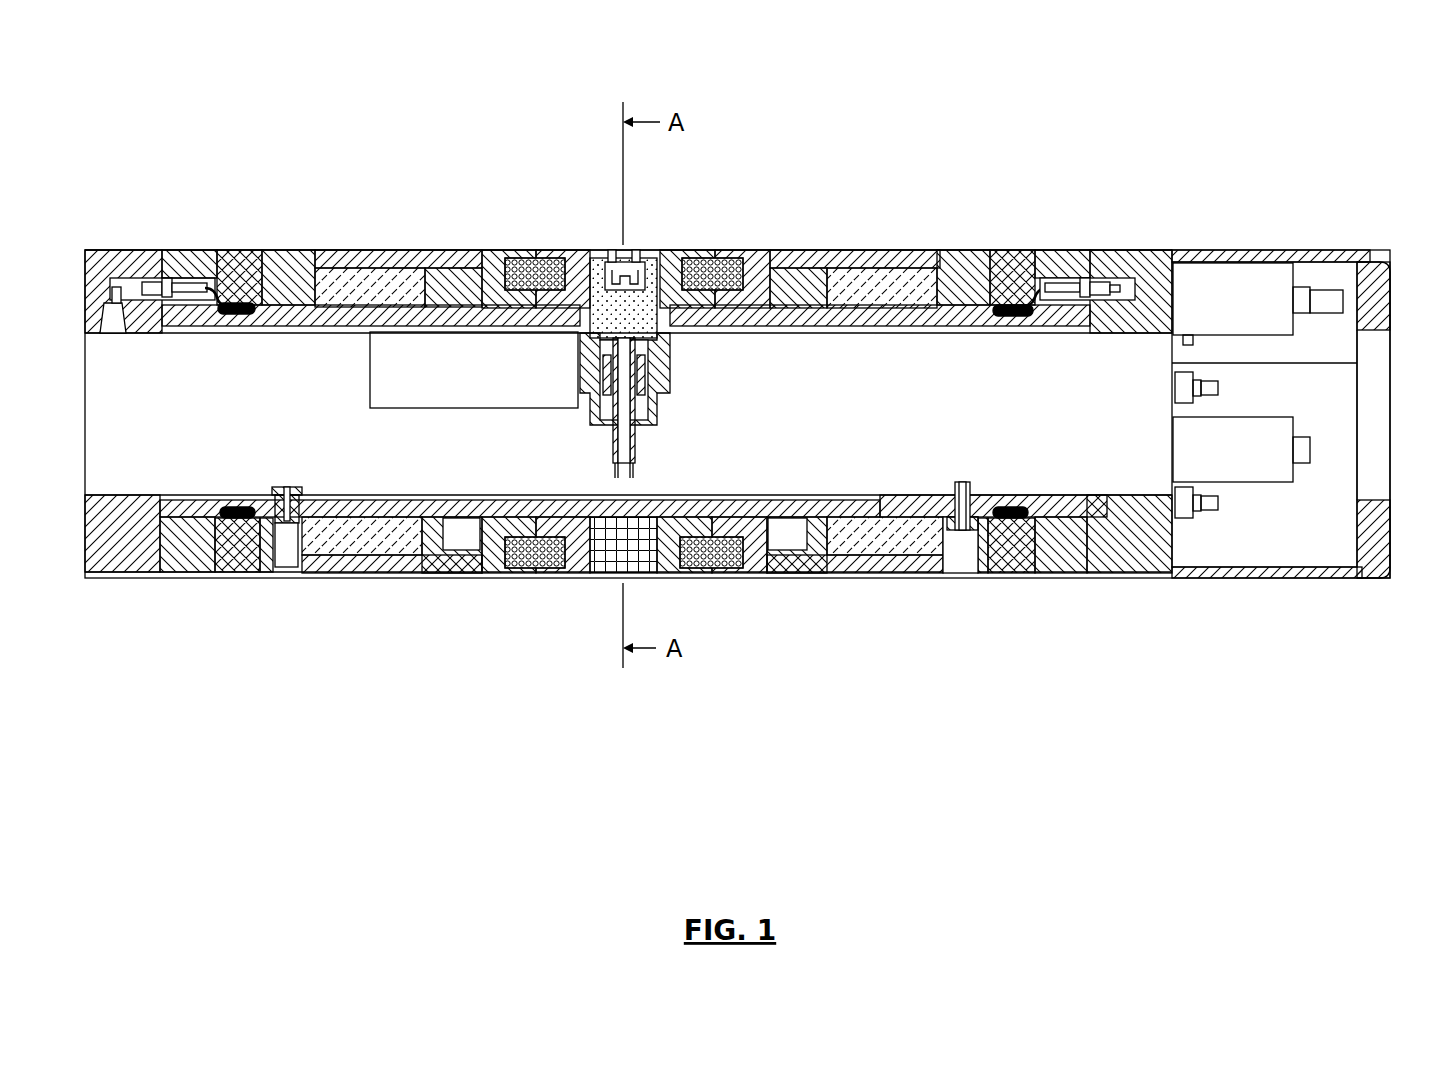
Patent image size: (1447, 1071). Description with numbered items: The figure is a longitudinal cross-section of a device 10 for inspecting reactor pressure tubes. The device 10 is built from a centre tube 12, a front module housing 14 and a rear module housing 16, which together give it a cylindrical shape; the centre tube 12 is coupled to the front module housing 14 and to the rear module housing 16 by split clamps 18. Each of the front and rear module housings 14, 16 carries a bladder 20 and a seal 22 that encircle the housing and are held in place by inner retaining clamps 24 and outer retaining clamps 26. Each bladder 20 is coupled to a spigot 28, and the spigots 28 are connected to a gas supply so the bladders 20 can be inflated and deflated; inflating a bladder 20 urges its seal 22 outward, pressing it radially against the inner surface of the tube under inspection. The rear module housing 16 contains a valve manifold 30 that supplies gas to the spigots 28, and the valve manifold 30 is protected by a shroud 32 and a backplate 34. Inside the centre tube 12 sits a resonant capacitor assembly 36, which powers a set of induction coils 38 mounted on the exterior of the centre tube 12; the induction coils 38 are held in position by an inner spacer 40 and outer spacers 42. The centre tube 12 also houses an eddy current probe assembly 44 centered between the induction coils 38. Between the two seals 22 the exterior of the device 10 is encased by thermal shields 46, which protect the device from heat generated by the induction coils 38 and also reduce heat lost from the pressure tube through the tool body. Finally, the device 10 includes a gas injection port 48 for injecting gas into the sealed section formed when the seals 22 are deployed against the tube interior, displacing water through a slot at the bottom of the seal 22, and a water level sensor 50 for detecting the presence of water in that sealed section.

The device 10 is at (194, 68).
The centre tube 12 is at (718, 323).
The front module housing 14 is at (112, 560).
The rear module housing 16 is at (1096, 550).
The split clamps 18 is at (385, 280).
The bladder 20 is at (247, 315).
The seal 22 is at (249, 252).
The inner retaining clamps 24 is at (313, 270).
The outer retaining clamps 26 is at (188, 250).
The spigot 28 is at (170, 305).
The valve manifold 30 is at (1242, 463).
The shroud 32 is at (1247, 252).
The backplate 34 is at (1385, 514).
The resonant capacitor assembly 36 is at (474, 370).
The induction coils 38 is at (528, 264).
The inner spacer 40 is at (600, 572).
The outer spacers 42 is at (463, 273).
The eddy current probe assembly 44 is at (656, 238).
The thermal shields 46 is at (337, 254).
The gas injection port 48 is at (957, 486).
The water level sensor 50 is at (300, 489).